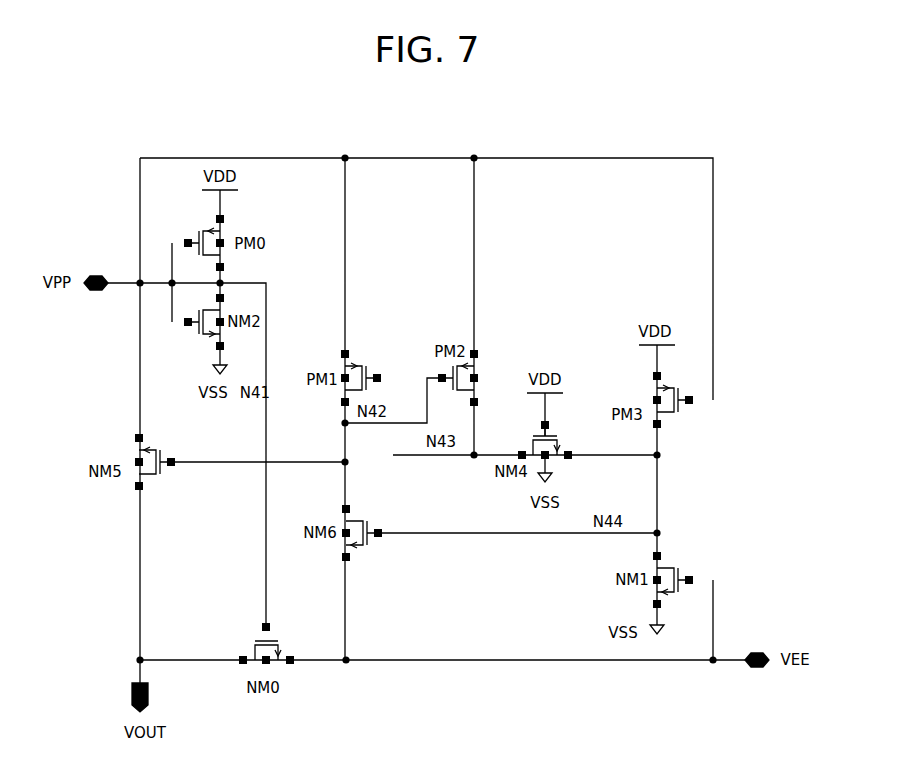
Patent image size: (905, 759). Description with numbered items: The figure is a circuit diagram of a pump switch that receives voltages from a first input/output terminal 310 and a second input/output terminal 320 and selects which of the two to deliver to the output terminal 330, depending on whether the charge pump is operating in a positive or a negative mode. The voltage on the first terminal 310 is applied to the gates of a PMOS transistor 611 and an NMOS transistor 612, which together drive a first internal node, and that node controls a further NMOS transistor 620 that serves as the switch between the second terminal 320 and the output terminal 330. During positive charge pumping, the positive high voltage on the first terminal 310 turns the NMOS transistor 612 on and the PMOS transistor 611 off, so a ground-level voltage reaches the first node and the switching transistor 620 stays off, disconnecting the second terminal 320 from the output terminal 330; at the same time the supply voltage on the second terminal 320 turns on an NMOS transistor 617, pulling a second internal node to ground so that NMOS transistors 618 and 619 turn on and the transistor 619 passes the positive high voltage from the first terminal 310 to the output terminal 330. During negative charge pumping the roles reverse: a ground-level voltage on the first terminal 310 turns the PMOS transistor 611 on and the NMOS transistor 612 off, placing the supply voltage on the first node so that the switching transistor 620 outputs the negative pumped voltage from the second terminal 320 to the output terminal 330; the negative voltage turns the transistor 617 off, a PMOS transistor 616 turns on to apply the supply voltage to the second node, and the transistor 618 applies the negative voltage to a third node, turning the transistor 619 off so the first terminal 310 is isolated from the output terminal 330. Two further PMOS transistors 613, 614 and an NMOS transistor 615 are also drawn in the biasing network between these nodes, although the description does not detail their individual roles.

The input/output terminal VPP 310 is at (65, 265).
The input/output terminal VEE 320 is at (772, 648).
The VOUT 330 is at (122, 710).
The PMOS transistor PMO 611 is at (232, 226).
The NMOS transistor NM2 612 is at (215, 345).
The PMOS transistor PM1 613 is at (352, 350).
The PMOS transistor PM2 614 is at (485, 358).
The NMOS transistor NM4 615 is at (556, 430).
The PMOS transistor PM3 616 is at (646, 382).
The NMOS transistor NM1 617 is at (678, 562).
The NMOS transistor NM6 618 is at (358, 514).
The NMOS transistor NM5 619 is at (153, 482).
The NMOS transistor NMO 620 is at (255, 640).